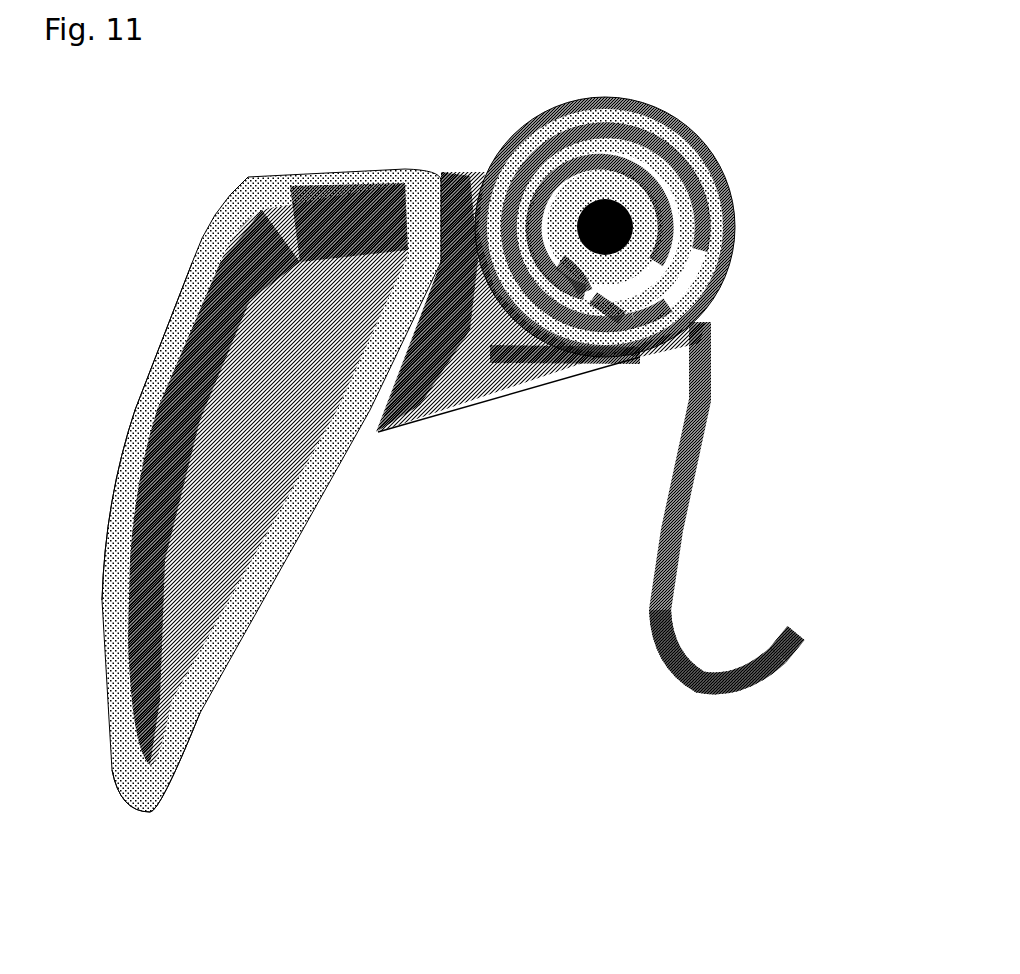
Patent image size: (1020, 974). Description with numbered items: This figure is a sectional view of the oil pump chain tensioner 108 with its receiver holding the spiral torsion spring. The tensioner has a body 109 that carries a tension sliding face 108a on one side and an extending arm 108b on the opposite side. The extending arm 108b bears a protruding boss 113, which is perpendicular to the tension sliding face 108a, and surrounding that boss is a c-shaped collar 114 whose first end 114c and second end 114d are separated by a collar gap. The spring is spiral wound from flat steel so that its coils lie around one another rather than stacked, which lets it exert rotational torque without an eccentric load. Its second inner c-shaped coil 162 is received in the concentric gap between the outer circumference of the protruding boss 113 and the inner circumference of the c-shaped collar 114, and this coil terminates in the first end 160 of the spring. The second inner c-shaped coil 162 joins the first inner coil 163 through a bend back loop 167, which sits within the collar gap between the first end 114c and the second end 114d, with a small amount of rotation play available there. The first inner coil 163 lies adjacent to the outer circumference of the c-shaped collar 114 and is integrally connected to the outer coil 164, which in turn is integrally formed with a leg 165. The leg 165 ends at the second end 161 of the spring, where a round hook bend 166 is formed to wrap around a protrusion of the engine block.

The oil pump chain tensioner 108 is at (328, 172).
The tension sliding face 108a is at (188, 268).
The extending arm 108b is at (472, 358).
The body 109 is at (196, 712).
The protruding boss 113 is at (616, 178).
The c-shaped collar 114 is at (583, 160).
The first end of c-shaped collar 114c is at (580, 305).
The second end of c-shaped collar 114d is at (628, 318).
The first end of torsion spring 160 is at (668, 230).
The second end of torsion spring 161 is at (790, 626).
The second inner c-shaped coil 162 is at (678, 210).
The first inner coil 163 is at (714, 160).
The outer coil 164 is at (545, 120).
The leg 165 is at (705, 426).
The hook bend 166 is at (700, 672).
The bend back loop 167 is at (606, 318).